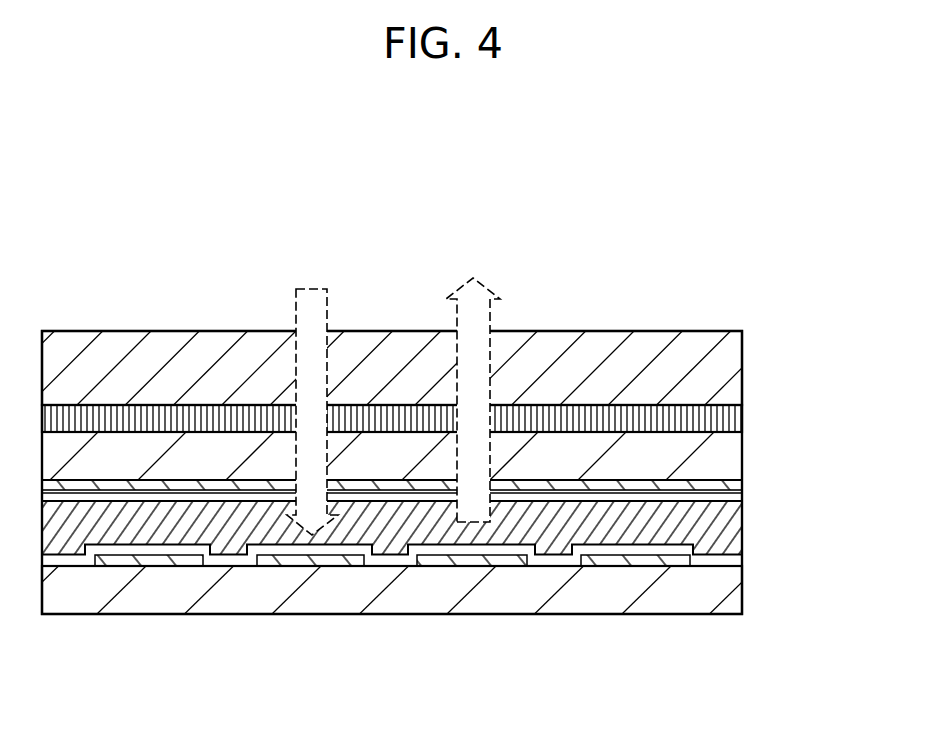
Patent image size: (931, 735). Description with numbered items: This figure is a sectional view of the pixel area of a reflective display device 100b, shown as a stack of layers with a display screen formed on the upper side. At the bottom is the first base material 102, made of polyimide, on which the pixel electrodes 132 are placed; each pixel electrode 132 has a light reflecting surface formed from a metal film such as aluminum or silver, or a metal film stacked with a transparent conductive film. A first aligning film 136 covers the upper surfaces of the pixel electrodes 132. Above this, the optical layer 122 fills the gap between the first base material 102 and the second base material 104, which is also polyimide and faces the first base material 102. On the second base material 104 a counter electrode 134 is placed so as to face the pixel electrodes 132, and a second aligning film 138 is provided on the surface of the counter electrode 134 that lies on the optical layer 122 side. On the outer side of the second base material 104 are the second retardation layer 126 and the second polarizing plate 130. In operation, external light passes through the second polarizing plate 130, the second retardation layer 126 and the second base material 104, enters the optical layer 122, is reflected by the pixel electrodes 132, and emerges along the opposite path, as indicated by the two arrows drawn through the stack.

The reflective display device 100b is at (580, 260).
The first base material 102 is at (730, 596).
The second base material 104 is at (732, 458).
The optical layer 122 is at (730, 528).
The second retardation layer 126 is at (733, 421).
The second polarizing plate 130 is at (732, 363).
The pixel electrode 132 is at (145, 560).
The counter electrode 134 is at (167, 488).
The first aligning film 136 is at (62, 560).
The second aligning film 138 is at (97, 494).